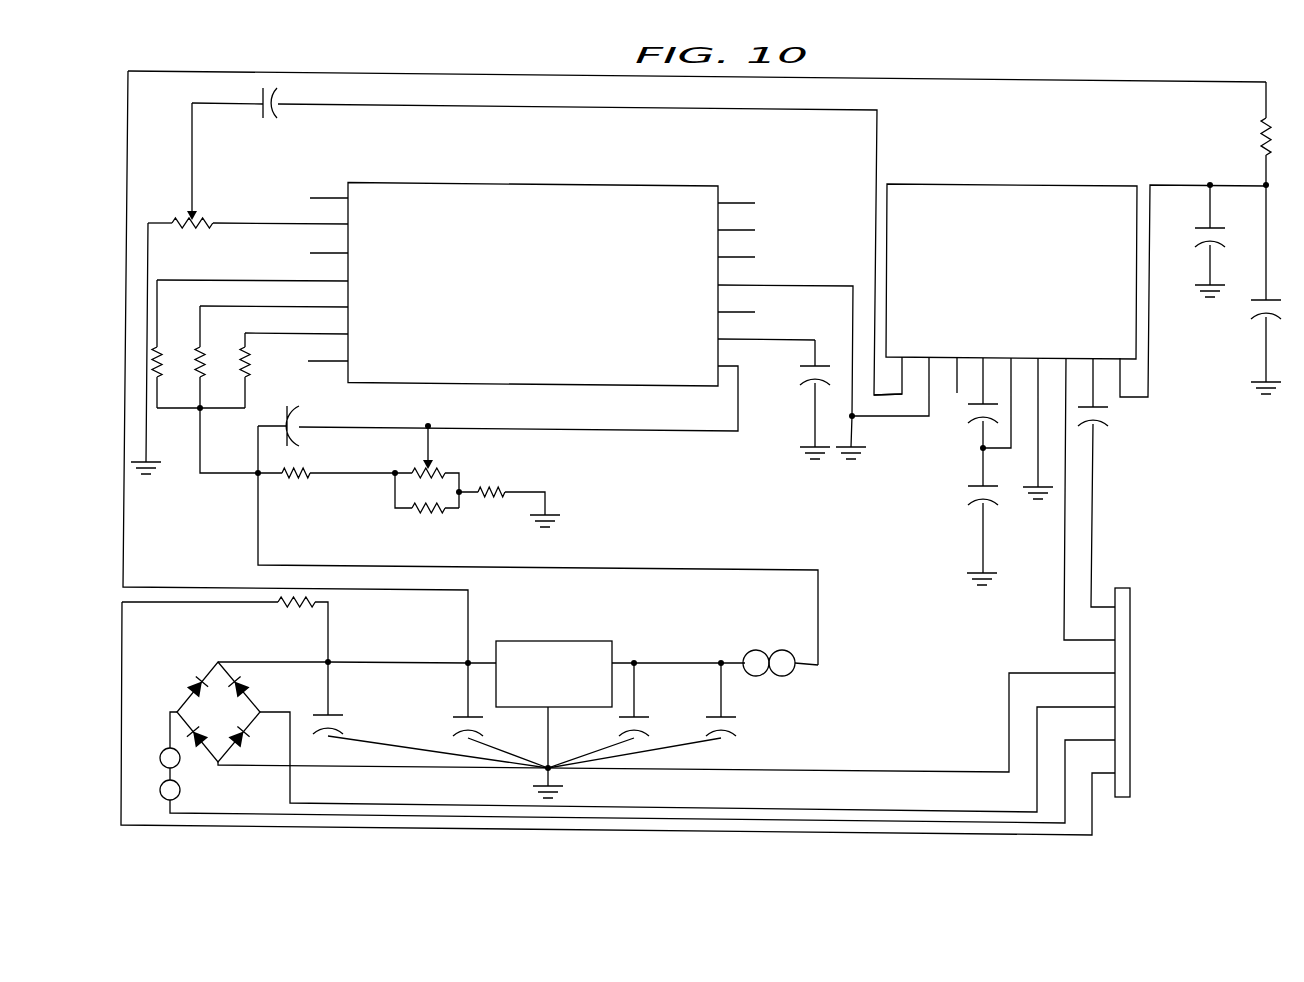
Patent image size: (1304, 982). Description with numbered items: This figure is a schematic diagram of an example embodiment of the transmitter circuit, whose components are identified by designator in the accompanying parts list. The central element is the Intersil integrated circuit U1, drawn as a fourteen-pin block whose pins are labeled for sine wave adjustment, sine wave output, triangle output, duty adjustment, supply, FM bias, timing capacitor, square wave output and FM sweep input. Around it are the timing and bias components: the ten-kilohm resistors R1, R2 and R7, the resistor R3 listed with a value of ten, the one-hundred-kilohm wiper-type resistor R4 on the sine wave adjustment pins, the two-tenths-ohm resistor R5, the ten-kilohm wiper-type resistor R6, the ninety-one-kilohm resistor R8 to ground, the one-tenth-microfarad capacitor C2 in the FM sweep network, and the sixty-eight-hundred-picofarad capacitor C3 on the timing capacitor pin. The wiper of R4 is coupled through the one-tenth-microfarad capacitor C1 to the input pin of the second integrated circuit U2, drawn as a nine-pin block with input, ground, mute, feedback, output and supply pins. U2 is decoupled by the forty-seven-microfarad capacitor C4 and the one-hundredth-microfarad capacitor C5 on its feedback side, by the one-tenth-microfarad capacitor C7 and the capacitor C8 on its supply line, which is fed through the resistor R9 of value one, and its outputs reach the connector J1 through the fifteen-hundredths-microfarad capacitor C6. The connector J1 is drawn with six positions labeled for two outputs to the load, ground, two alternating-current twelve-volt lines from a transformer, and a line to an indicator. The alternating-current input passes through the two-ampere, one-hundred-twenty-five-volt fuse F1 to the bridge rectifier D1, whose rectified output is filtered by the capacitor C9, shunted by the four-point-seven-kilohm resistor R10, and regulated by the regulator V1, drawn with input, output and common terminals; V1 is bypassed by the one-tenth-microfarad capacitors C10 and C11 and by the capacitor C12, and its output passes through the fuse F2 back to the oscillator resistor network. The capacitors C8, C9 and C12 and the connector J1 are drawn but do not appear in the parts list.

The 0.1 µF capacitor C1 is at (547, 241).
The 0.1 µF capacitor C2 is at (310, 427).
The 6800 pF capacitor C3 is at (793, 399).
The 47 µF capacitor C4 is at (960, 422).
The 0.01 µF capacitor C5 is at (1014, 535).
The 0.15 µF capacitor C6 is at (1125, 482).
The 0.1 µF capacitor C7 is at (1188, 241).
The capacitor 1000uF/25V C8 is at (1232, 334).
The capacitor 1000uF/25V C9 is at (424, 715).
The 0.1 µF capacitor C10 is at (489, 715).
The 0.1 µF capacitor C11 is at (621, 715).
The capacitor 1000uF/25V C12 is at (705, 715).
The 10K resistor R1 is at (173, 344).
The 10K resistor R2 is at (218, 354).
The resistor R3 is at (262, 370).
The 100K(W) resistor R4 is at (210, 211).
The 0.2 resistor R5 is at (328, 499).
The 10K(W) resistor R6 is at (453, 465).
The 10K resistor R7 is at (427, 516).
The 91K resistor R8 is at (508, 518).
The resistor R9 is at (1254, 191).
The 4.7K resistor R10 is at (290, 628).
The Intersil ICL8038 integrated circuit U1 is at (534, 285).
The M51516 integrated circuit U2 is at (1011, 260).
The NJM7812F regulator V1 is at (554, 692).
The BR84D-ND bridge rectifier D1 is at (195, 692).
The 2A/125V fuse F1 is at (216, 776).
The fuse F2 is at (780, 669).
The connector J1 is at (1194, 680).